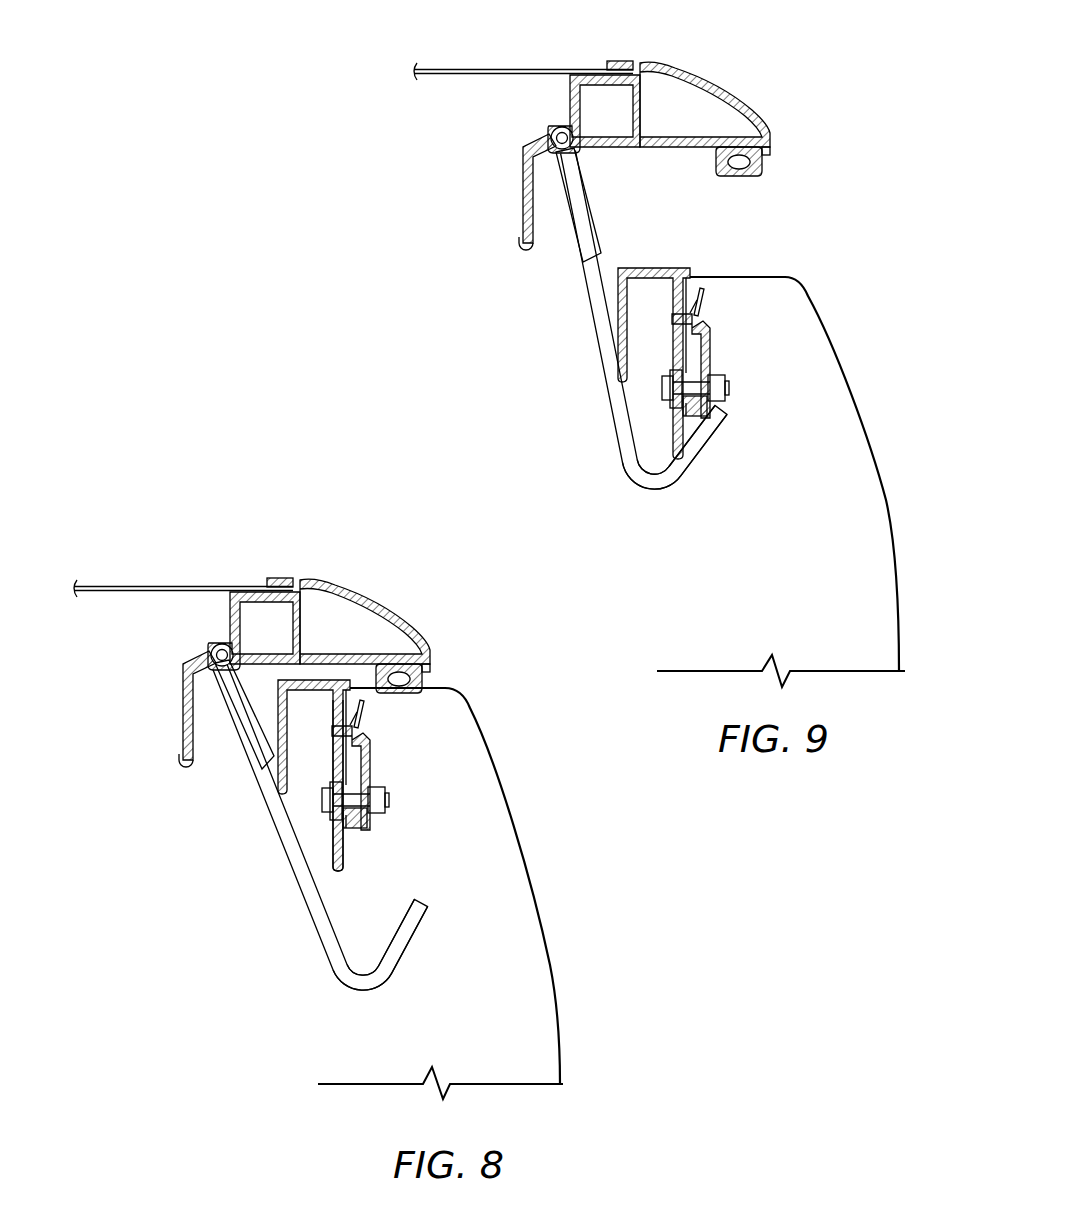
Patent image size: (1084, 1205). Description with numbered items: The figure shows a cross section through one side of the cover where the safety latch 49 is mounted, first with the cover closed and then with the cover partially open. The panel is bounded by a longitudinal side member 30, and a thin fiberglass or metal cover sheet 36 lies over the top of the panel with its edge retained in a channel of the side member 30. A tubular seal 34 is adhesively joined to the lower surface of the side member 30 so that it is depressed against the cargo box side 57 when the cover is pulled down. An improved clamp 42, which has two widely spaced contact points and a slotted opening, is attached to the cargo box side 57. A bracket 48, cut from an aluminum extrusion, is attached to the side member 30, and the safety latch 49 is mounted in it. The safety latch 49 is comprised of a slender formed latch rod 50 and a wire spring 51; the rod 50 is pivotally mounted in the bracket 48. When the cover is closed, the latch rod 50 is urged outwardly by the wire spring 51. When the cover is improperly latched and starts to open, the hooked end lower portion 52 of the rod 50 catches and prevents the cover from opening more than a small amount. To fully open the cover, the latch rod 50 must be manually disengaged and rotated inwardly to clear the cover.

In FIG. 9, the longitudinal side member 30 is at (745, 88).
In FIG. 8, the longitudinal side member 30 is at (397, 607).
In FIG. 9, the tubular seal 34 is at (740, 180).
In FIG. 8, the tubular seal 34 is at (420, 678).
In FIG. 9, the cover sheet 36 is at (495, 70).
In FIG. 8, the cover sheet 36 is at (125, 585).
In FIG. 9, the clamp 42 is at (714, 334).
In FIG. 8, the clamp 42 is at (373, 752).
In FIG. 9, the bracket 48 is at (517, 230).
In FIG. 8, the bracket 48 is at (345, 866).
In FIG. 9, the safety latch 49 is at (607, 402).
In FIG. 8, the safety latch 49 is at (313, 938).
In FIG. 9, the latch rod 50 is at (583, 310).
In FIG. 8, the latch rod 50 is at (287, 868).
In FIG. 9, the wire spring 51 is at (590, 222).
In FIG. 8, the wire spring 51 is at (247, 748).
In FIG. 9, the hooked end lower portion 52 is at (677, 489).
In FIG. 8, the hooked end lower portion 52 is at (380, 990).
In FIG. 9, the cargo box side 57 is at (878, 458).
In FIG. 8, the cargo box side 57 is at (552, 932).